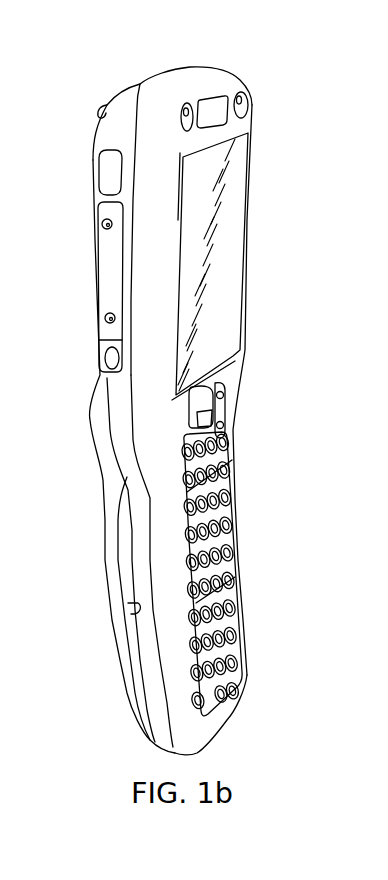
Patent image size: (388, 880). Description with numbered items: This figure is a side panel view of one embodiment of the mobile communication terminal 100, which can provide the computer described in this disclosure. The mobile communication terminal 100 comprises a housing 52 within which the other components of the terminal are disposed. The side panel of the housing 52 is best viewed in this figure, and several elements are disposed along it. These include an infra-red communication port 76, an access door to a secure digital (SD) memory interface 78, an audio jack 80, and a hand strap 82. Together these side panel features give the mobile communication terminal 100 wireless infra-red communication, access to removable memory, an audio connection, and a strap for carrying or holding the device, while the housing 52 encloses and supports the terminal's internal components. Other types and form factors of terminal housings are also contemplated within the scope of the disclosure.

The mobile communication terminal 100 is at (272, 67).
The housing 52 is at (132, 95).
The infra-red communication port 76 is at (110, 166).
The access door to a secure digital (SD) memory interface 78 is at (108, 266).
The audio jack 80 is at (108, 357).
The hand strap 82 is at (114, 473).